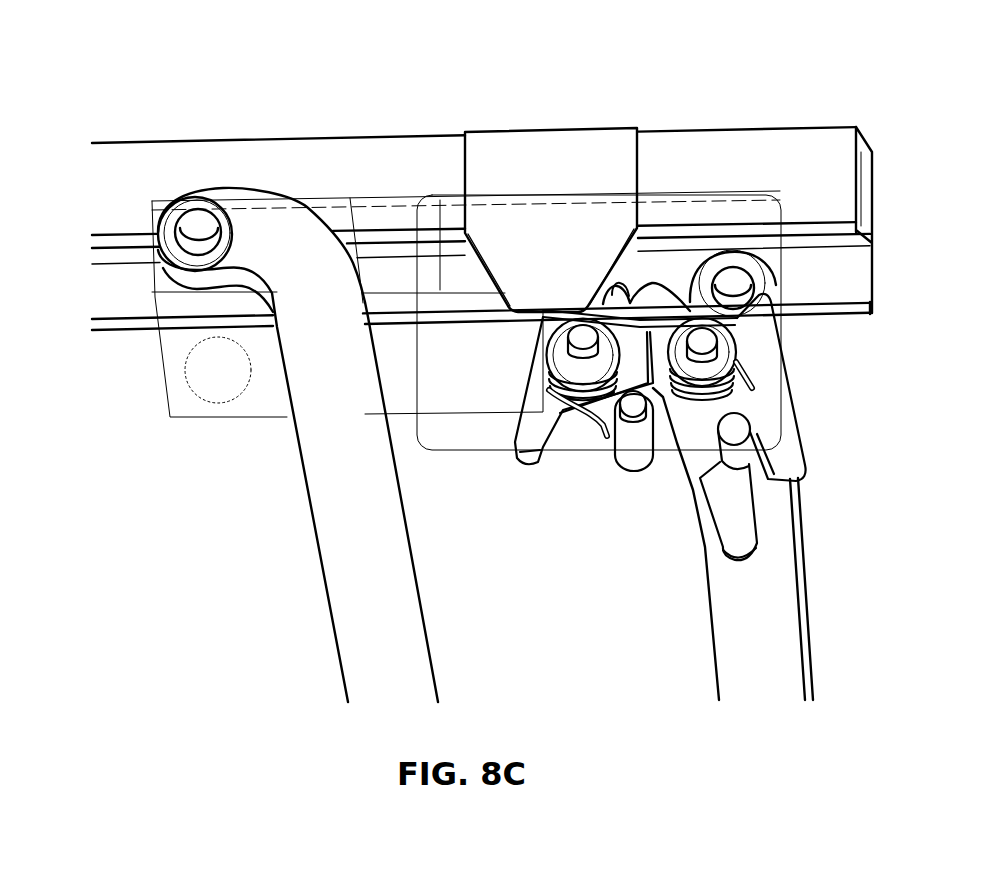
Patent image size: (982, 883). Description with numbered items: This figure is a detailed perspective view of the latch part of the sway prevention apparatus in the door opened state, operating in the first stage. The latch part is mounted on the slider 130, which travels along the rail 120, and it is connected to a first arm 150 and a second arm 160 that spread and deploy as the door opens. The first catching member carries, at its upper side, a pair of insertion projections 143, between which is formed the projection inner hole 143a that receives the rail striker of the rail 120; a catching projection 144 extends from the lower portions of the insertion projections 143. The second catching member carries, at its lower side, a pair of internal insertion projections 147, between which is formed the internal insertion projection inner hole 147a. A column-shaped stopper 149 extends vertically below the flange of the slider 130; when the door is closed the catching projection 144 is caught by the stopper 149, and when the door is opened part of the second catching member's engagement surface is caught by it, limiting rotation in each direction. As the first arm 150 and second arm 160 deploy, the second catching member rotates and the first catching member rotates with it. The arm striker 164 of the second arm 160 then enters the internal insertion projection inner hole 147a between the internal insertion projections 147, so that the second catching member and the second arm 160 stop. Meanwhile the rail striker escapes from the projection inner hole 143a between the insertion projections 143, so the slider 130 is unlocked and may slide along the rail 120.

The rail 120 is at (348, 155).
The slider 130 is at (163, 373).
The insertion projections 143 is at (662, 295).
The projection inner hole 143a is at (623, 285).
The catching projection 144 is at (513, 428).
The internal insertion projections 147 is at (736, 530).
The internal insertion projection inner hole 147a is at (751, 471).
The stopper 149 is at (621, 463).
The first arm 150 is at (343, 566).
The second arm 160 is at (730, 652).
The arm striker 164 is at (737, 427).